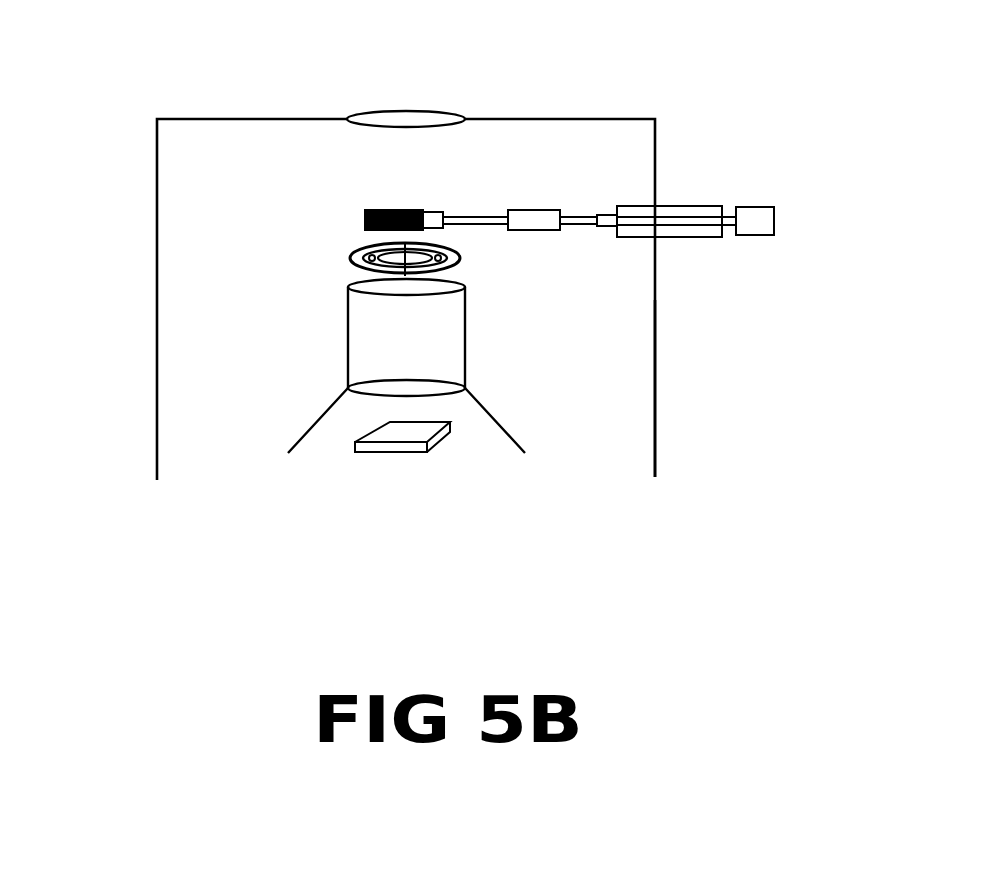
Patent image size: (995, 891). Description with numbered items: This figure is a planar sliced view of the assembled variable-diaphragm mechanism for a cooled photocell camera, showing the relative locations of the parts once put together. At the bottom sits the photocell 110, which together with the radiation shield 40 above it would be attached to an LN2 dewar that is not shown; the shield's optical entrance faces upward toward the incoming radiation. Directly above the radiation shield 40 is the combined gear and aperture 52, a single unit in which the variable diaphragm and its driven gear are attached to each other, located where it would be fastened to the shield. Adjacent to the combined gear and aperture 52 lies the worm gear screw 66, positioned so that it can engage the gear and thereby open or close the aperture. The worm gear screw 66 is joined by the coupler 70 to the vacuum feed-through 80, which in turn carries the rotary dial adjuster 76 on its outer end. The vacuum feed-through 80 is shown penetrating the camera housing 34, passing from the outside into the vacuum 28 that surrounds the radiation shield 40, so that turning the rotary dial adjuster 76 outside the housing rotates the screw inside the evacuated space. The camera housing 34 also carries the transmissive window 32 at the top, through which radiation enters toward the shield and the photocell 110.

The vacuum 28 is at (215, 185).
The transmissive window 32 is at (382, 112).
The camera housing 34 is at (655, 455).
The radiation shield 40 is at (297, 437).
The combined gear and aperture 52 is at (362, 250).
The worm gear screw 66 is at (372, 208).
The coupler 70 is at (556, 208).
The rotary dial adjuster 76 is at (778, 207).
The vacuum feed-through 80 is at (676, 205).
The photocell 110 is at (455, 428).